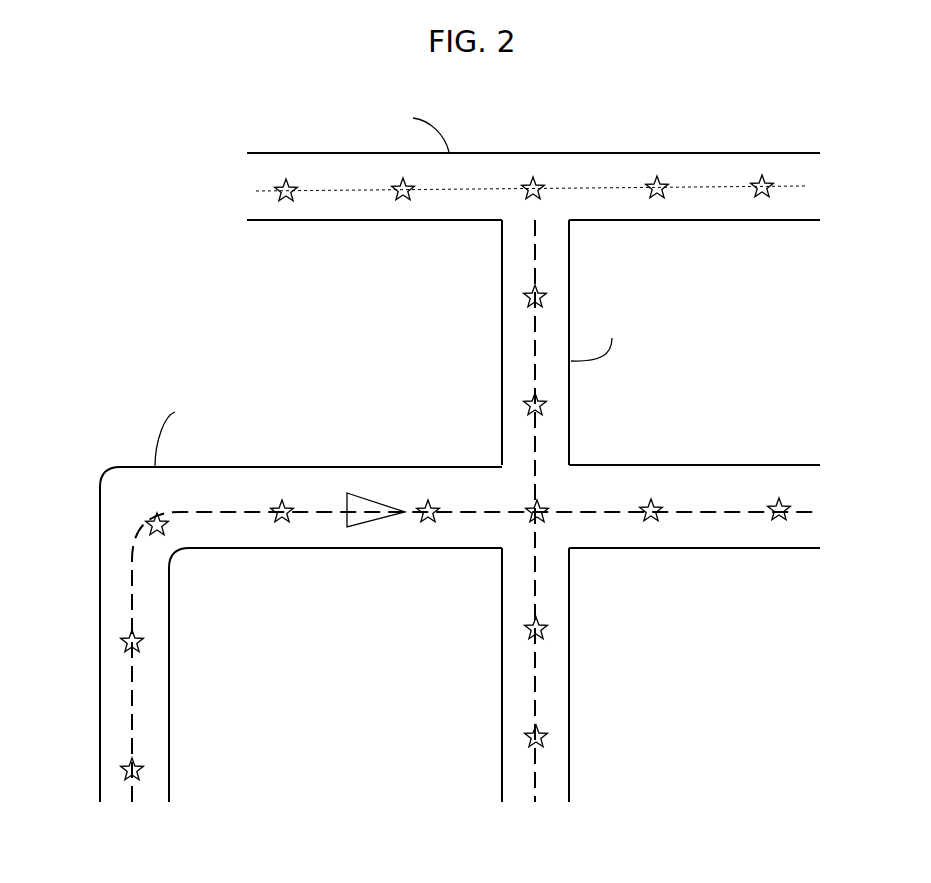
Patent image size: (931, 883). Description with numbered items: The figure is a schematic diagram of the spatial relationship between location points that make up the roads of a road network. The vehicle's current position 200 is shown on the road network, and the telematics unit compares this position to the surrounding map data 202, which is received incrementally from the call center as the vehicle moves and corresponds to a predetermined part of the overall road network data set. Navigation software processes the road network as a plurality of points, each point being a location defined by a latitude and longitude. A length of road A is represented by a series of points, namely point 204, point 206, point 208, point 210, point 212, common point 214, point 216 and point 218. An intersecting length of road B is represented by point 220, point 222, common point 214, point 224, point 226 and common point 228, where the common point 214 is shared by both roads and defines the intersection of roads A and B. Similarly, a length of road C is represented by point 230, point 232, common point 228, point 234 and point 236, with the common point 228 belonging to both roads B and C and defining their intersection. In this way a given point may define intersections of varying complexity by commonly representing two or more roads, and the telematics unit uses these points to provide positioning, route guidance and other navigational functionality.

The vehicle's current position 200 is at (366, 527).
The map data 202 is at (291, 348).
The point 204 is at (128, 765).
The point 206 is at (128, 640).
The point 208 is at (150, 520).
The point 210 is at (278, 512).
The point 212 is at (428, 502).
The common point 214 is at (537, 505).
The point 216 is at (657, 505).
The point 218 is at (786, 505).
The point 220 is at (542, 733).
The point 222 is at (542, 628).
The point 224 is at (540, 405).
The point 226 is at (530, 297).
The common point 228 is at (535, 186).
The point 230 is at (282, 196).
The point 232 is at (398, 196).
The point 234 is at (663, 192).
The point 236 is at (767, 192).